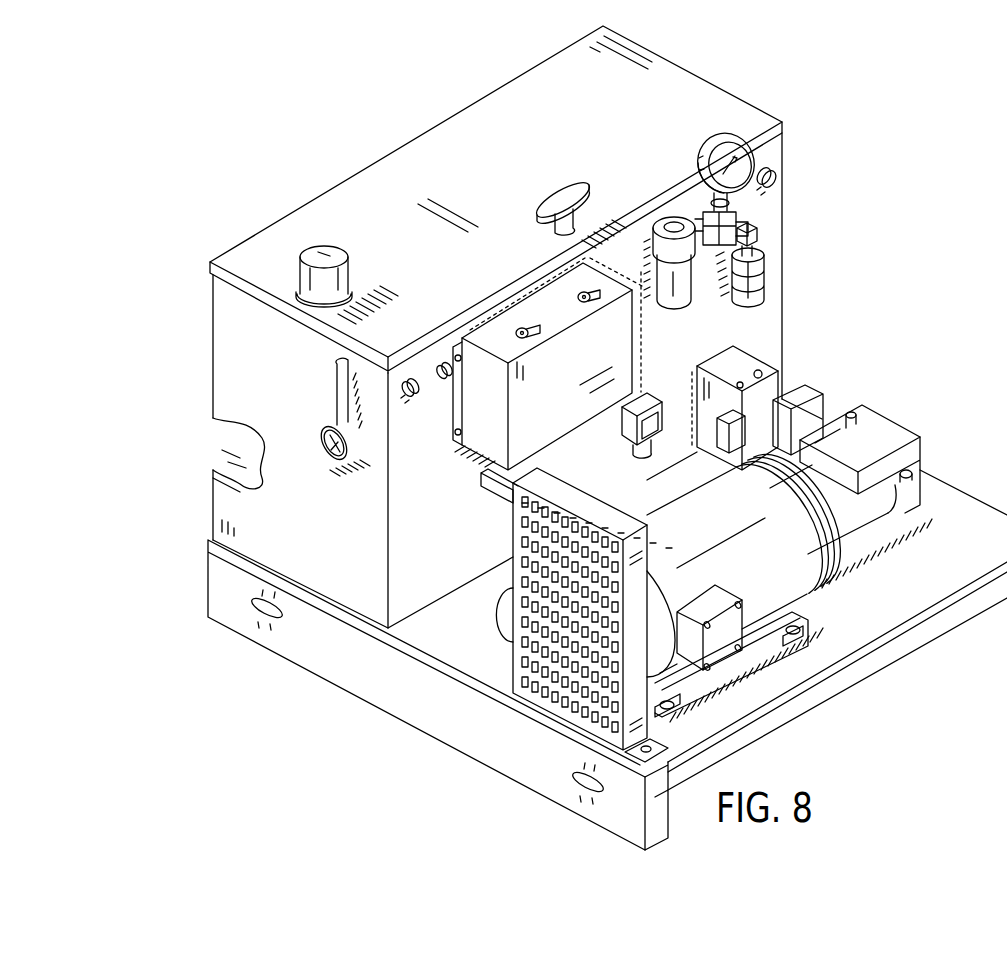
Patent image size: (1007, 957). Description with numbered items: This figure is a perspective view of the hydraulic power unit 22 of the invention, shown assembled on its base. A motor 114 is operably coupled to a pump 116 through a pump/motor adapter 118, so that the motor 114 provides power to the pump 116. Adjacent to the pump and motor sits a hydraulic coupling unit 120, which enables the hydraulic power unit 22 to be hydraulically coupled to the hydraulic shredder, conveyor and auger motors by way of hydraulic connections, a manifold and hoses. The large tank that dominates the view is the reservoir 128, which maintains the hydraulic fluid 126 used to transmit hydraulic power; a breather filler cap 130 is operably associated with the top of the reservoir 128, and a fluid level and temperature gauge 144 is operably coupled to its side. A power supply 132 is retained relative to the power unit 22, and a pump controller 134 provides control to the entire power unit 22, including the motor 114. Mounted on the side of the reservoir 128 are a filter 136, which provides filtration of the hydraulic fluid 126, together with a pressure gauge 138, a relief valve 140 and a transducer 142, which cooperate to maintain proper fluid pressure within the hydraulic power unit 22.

The hydraulic power unit 22 is at (346, 76).
The motor 114 is at (725, 623).
The pump 116 is at (922, 482).
The pump/motor adapter 118 is at (846, 528).
The hydraulic coupling unit 120 is at (770, 368).
The hydraulic fluid 126 is at (223, 457).
The reservoir 128 is at (327, 189).
The breather filler cap 130 is at (325, 250).
The power supply 132 is at (552, 313).
The pump controller 134 is at (645, 402).
The filter 136 is at (676, 230).
The pressure gauge 138 is at (708, 165).
The relief valve 140 is at (737, 207).
The transducer 142 is at (763, 262).
The fluid level and temperature gauge 144 is at (342, 394).